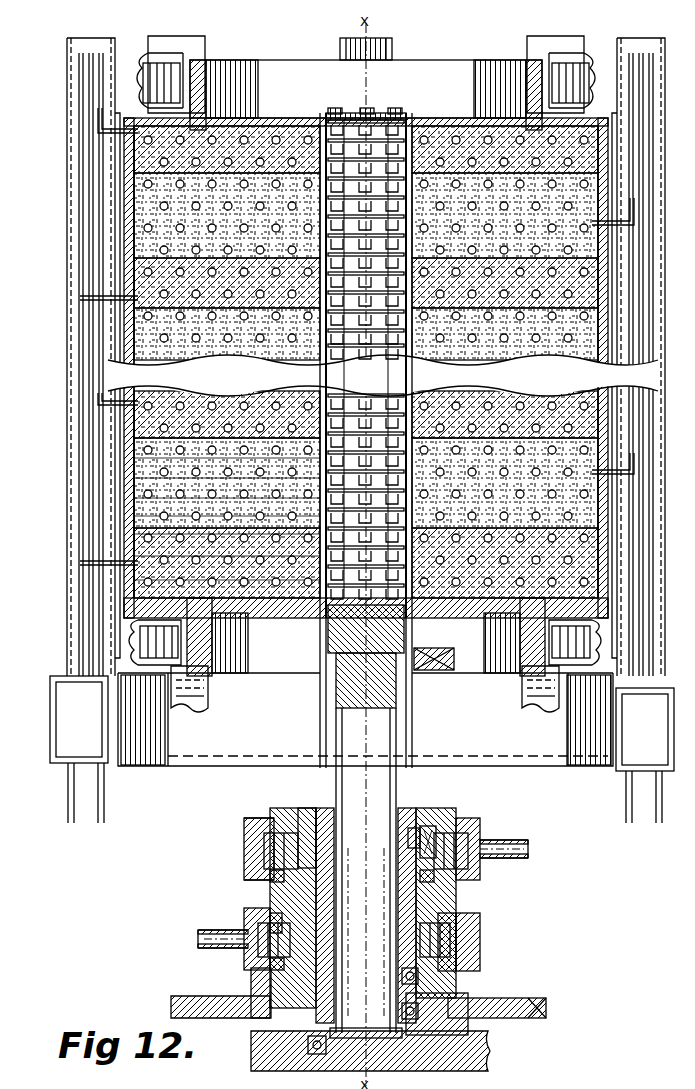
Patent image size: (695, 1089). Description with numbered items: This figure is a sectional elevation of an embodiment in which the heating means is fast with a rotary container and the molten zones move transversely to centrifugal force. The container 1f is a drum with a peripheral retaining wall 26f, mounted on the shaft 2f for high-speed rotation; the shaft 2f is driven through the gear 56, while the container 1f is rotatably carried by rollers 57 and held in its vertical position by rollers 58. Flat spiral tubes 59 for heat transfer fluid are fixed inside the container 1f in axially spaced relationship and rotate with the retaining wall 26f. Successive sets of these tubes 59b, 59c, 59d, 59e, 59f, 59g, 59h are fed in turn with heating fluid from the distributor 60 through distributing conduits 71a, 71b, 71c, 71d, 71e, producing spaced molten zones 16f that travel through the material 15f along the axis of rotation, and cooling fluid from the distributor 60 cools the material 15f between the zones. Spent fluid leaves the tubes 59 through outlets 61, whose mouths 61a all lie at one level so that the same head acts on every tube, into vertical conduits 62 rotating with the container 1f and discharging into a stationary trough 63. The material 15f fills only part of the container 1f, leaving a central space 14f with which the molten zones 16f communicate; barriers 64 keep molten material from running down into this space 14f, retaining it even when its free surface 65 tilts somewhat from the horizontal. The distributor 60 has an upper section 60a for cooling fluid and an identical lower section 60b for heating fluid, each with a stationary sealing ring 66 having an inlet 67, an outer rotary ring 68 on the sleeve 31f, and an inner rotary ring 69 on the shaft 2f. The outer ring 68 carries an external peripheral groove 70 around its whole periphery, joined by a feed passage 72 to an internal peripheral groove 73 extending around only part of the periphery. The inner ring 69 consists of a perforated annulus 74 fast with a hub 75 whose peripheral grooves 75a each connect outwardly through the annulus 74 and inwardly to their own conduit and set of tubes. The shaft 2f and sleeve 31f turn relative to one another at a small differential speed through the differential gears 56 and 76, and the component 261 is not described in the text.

The container 1f is at (600, 330).
The shaft 2f is at (360, 726).
The central space 14f is at (380, 340).
The material 15f is at (300, 255).
The molten zones 16f is at (270, 345).
The peripheral retaining wall 26f is at (120, 340).
The sleeve 31f is at (420, 978).
The gear 56 is at (425, 646).
The rollers 57 is at (190, 700).
The rollers 58 is at (153, 92).
The tubes 59 is at (230, 340).
The set of tubes 59b is at (300, 555).
The set of tubes 59c is at (300, 530).
The set of tubes 59d is at (300, 505).
The set of tubes 59e is at (300, 480).
The set of tubes 59f is at (300, 452).
The set of tubes 59g is at (300, 430).
The set of tubes 59h is at (300, 412).
The distributor 60 is at (482, 892).
The upper section 60a is at (230, 840).
The lower section 60b is at (470, 926).
The outlets 61 is at (626, 75).
The mouths 61a is at (92, 60).
The vertical conduits 62 is at (250, 52).
The stationary trough 63 is at (56, 755).
The barriers 64 is at (350, 250).
The free surface 65 is at (402, 124).
The stationary sealing ring 66 is at (238, 830).
The inlet 67 is at (195, 940).
The outer rotary ring 68 is at (292, 830).
The inner rotary ring 69 is at (300, 830).
The external peripheral groove 70 is at (262, 830).
The distributing conduit 71a is at (312, 118).
The distributing conduit 71b is at (325, 102).
The distributing conduit 71c is at (356, 102).
The distributing conduit 71d is at (386, 102).
The distributing conduit 71e is at (404, 120).
The feed passage 72 is at (255, 925).
The internal peripheral groove 73 is at (422, 830).
The perforated annulus 74 is at (262, 922).
The hub 75 is at (420, 895).
The peripheral grooves 75a is at (262, 866).
The differential gear 76 is at (512, 1010).
The ring 261 is at (228, 605).